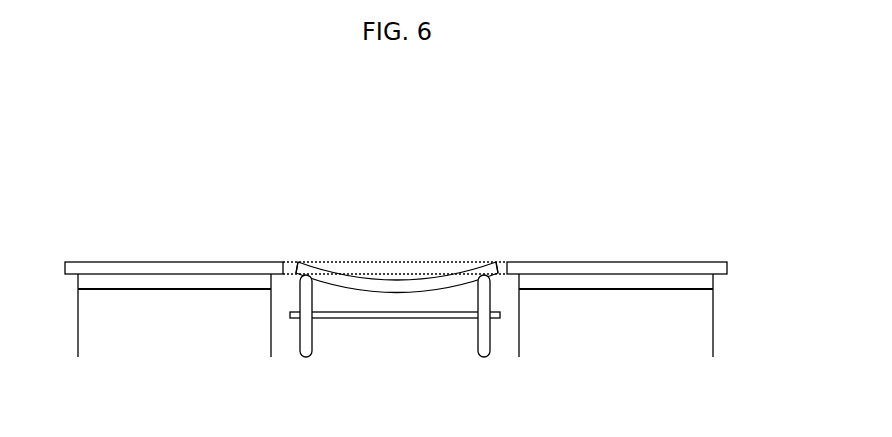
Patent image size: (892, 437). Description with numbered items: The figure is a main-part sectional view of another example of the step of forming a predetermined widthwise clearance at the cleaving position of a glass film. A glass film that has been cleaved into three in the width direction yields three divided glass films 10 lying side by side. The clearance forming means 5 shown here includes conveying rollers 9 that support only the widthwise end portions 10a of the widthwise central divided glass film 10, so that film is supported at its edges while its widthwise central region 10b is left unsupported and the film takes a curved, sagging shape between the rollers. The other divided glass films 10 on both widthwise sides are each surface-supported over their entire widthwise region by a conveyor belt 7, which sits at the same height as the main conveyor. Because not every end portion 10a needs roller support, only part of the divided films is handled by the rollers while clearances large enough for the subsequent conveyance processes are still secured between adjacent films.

The clearance forming means 5 is at (750, 182).
The conveyor belt 7 is at (147, 283).
The conveying rollers 9 is at (306, 345).
The divided glass film 10 is at (175, 262).
The widthwise end portion 10a is at (300, 262).
The widthwise central region 10b is at (397, 293).